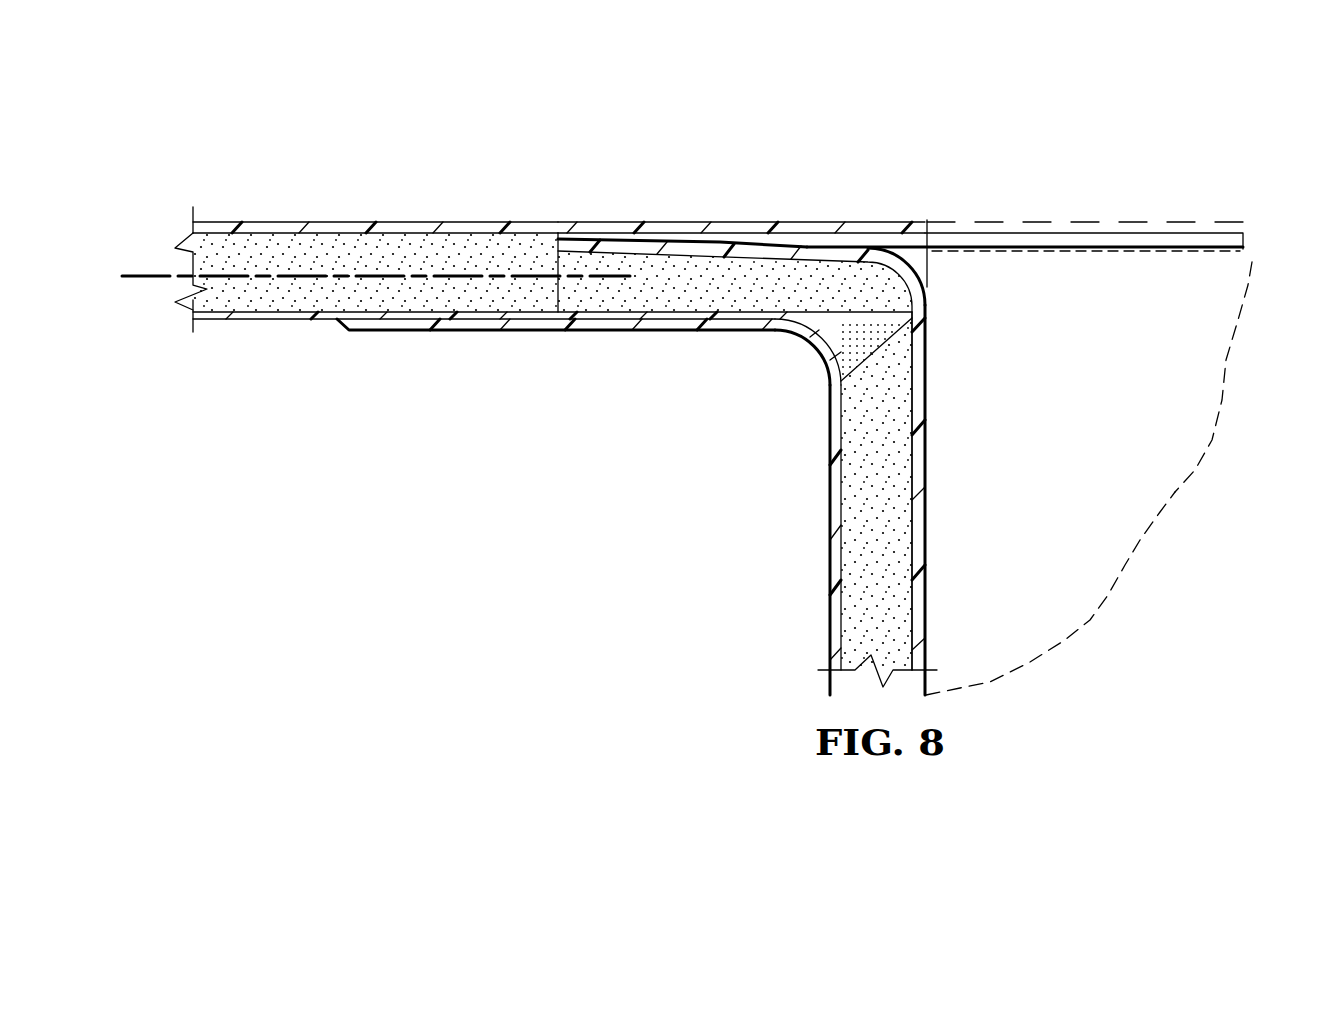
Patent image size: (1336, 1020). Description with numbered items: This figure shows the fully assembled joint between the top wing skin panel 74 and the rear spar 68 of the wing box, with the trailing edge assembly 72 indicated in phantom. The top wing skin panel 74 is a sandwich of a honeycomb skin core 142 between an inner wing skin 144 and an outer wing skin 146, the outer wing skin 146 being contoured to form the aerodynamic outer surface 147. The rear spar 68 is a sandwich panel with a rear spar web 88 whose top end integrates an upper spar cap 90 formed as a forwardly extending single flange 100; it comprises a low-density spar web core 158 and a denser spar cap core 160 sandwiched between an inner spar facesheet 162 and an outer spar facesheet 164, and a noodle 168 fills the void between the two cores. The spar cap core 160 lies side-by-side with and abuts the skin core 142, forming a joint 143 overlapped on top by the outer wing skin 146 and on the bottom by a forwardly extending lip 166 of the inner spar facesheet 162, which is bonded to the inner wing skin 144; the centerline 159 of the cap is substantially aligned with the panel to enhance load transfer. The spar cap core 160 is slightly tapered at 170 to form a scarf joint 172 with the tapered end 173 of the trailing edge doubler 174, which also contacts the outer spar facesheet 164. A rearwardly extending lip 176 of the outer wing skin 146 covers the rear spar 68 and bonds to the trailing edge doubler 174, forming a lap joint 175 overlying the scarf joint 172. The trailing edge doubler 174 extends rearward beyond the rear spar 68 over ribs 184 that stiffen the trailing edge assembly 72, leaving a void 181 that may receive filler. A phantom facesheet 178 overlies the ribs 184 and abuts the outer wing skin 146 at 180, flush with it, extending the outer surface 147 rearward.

The top wing skin panel 74 is at (403, 168).
The skin core 142 is at (277, 243).
The outer wing skin 146 is at (348, 223).
The outer surface 147 is at (477, 222).
The joint 143 is at (560, 260).
The rearwardly extending lip 176 is at (603, 222).
The scarf joint 172 is at (669, 221).
The lap joint 175 is at (727, 216).
The tapered end 173 is at (818, 243).
The centerline 159 is at (145, 273).
The inner wing skin 144 is at (236, 313).
The forwardly extending lip 166 is at (454, 323).
The spar cap core 160 is at (587, 307).
The taper 170 is at (703, 272).
The upper spar cap 90 is at (613, 400).
The single flange 100 is at (669, 413).
The rear spar 68 is at (786, 385).
The rear spar web 88 is at (797, 482).
The inner spar facesheet 162 is at (829, 625).
The outer spar facesheet 164 is at (928, 410).
The spar web core 158 is at (905, 540).
The noodle 168 is at (912, 345).
The void 181 is at (920, 267).
The abutment 180 is at (930, 184).
The facesheet 178 is at (1043, 220).
The trailing edge doubler 174 is at (1166, 232).
The ribs 184 is at (1180, 497).
The trailing edge assembly 72 is at (1126, 570).